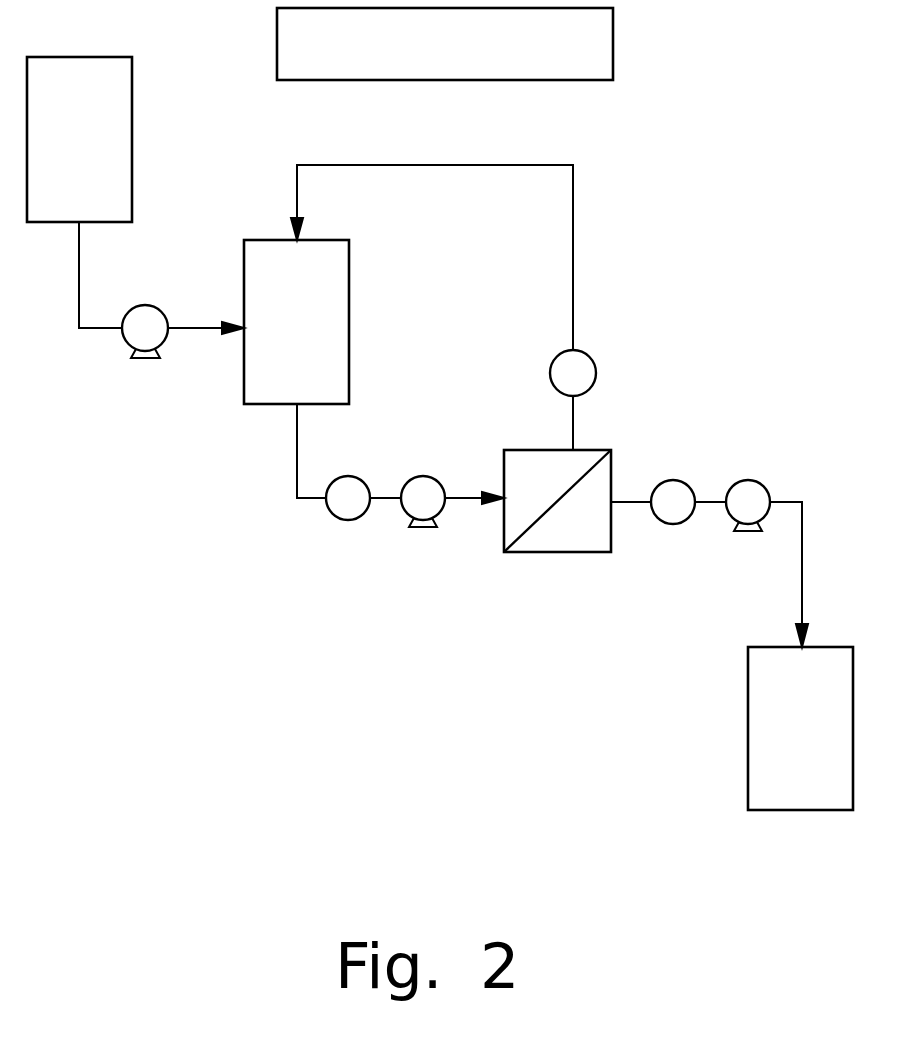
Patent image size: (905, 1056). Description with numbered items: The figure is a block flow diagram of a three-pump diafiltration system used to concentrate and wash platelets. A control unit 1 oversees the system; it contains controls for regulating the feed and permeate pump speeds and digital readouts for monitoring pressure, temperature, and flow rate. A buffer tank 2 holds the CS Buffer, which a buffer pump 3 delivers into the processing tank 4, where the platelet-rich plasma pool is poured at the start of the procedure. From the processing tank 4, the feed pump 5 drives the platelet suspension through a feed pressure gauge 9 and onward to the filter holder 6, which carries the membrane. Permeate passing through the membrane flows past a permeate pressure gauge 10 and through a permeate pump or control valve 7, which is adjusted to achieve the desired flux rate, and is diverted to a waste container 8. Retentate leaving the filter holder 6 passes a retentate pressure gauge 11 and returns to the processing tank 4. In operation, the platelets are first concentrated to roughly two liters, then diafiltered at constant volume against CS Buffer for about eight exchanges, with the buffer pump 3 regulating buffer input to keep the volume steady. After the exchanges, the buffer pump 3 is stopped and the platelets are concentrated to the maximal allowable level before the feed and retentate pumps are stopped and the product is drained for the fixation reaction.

The control unit 1 is at (425, 51).
The buffer tank 2 is at (73, 146).
The buffer pump 3 is at (147, 307).
The processing tank 4 is at (282, 338).
The feed pump 5 is at (400, 512).
The filter holder 6 is at (612, 467).
The permeate pump or control valve 7 is at (753, 478).
The waste container 8 is at (793, 734).
The feed pressure gauge 9 is at (352, 476).
The permeate pressure gauge 10 is at (560, 352).
The retentate pressure gauge 11 is at (665, 523).